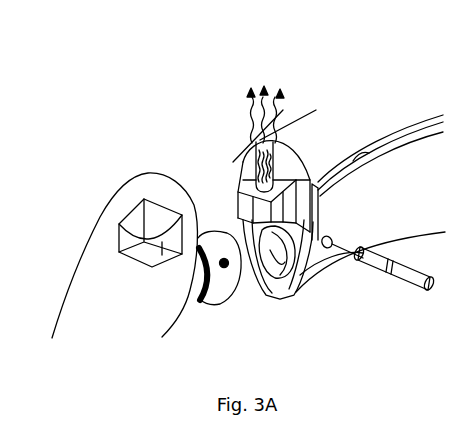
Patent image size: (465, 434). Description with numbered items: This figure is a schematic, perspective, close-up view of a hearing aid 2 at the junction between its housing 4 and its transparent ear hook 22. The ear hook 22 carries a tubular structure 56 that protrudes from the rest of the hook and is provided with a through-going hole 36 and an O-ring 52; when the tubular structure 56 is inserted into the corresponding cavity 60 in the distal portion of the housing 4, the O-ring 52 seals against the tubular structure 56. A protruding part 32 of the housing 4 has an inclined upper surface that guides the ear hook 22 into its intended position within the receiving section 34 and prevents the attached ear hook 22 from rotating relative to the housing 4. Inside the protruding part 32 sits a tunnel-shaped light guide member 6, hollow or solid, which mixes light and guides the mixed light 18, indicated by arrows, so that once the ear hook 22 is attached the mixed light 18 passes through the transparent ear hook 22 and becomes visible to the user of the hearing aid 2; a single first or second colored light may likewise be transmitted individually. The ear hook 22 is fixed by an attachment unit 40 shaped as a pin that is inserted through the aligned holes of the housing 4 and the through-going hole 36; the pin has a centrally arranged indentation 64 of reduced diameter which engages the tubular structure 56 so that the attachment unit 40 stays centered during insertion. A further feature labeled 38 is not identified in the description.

The hearing aid 2 is at (123, 91).
The housing 4 is at (318, 277).
The light guide member 6 is at (256, 175).
The mixed light 18 is at (252, 143).
The ear hook 22 is at (78, 260).
The protruding part 32 is at (238, 206).
The receiving section 34 is at (118, 223).
The through-going hole 36 is at (225, 268).
The pivot pin 38 is at (328, 243).
The attachment unit 40 is at (432, 288).
The O-ring 52 is at (203, 301).
The tubular structure 56 is at (209, 234).
The cavity 60 is at (277, 255).
The indentation 64 is at (390, 272).